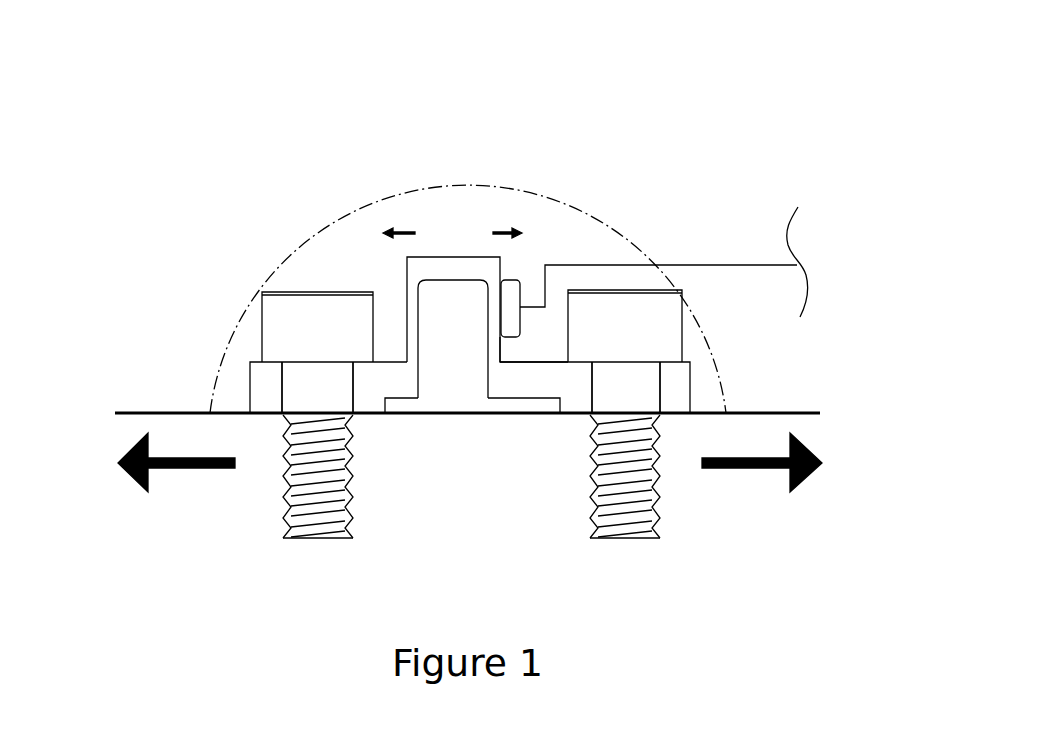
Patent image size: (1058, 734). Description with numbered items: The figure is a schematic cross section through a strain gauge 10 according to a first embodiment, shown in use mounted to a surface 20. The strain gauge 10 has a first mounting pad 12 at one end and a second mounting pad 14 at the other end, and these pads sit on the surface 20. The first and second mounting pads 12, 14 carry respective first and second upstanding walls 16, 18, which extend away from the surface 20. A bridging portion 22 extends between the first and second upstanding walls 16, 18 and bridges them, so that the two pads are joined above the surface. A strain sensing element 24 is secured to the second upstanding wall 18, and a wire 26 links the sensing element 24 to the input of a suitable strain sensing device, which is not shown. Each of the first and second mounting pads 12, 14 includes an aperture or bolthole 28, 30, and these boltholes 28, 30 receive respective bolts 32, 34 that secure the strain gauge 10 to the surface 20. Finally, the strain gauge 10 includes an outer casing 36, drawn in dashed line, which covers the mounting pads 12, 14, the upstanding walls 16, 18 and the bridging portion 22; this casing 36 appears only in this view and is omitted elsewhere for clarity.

The strain gauge 10 is at (160, 292).
The first mounting pad 12 is at (312, 536).
The second mounting pad 14 is at (648, 533).
The first upstanding wall 16 is at (407, 307).
The second upstanding wall 18 is at (511, 344).
The surface 20 is at (786, 411).
The bridging portion 22 is at (456, 257).
The strain sensing element 24 is at (514, 278).
The wire 26 is at (714, 263).
The bolthole 28 is at (287, 483).
The bolthole 30 is at (650, 460).
The bolt 32 is at (316, 520).
The bolt 34 is at (629, 516).
The casing 36 is at (374, 207).